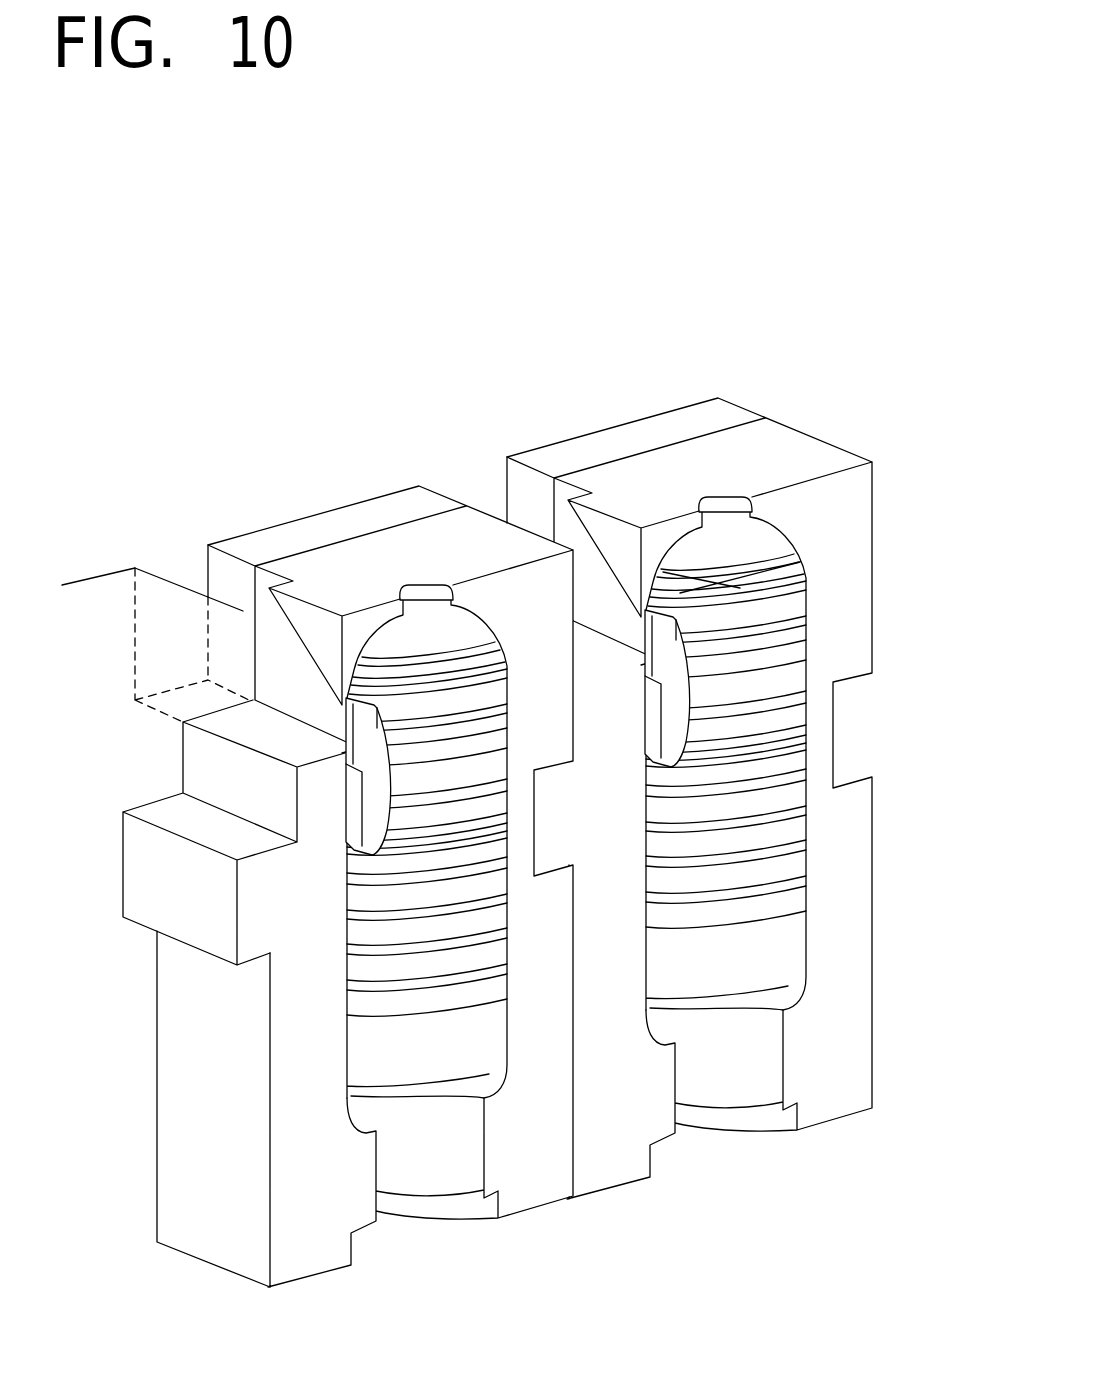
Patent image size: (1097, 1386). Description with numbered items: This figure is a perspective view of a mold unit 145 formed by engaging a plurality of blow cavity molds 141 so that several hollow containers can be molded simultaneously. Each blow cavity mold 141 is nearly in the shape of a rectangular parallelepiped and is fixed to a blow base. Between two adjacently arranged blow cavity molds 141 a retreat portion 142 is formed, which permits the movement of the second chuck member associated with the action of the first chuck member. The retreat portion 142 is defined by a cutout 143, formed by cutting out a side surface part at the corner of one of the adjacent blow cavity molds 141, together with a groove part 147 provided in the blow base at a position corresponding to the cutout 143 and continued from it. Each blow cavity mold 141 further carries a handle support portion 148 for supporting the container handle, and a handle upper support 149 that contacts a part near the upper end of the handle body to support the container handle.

The blow cavity mold 141 is at (504, 816).
The retreat portion 142 is at (318, 549).
The cutout 143 is at (318, 549).
The groove part 147 is at (516, 508).
The mold unit 145 is at (703, 262).
The handle support portion 148 is at (680, 668).
The handle upper support 149 is at (660, 576).